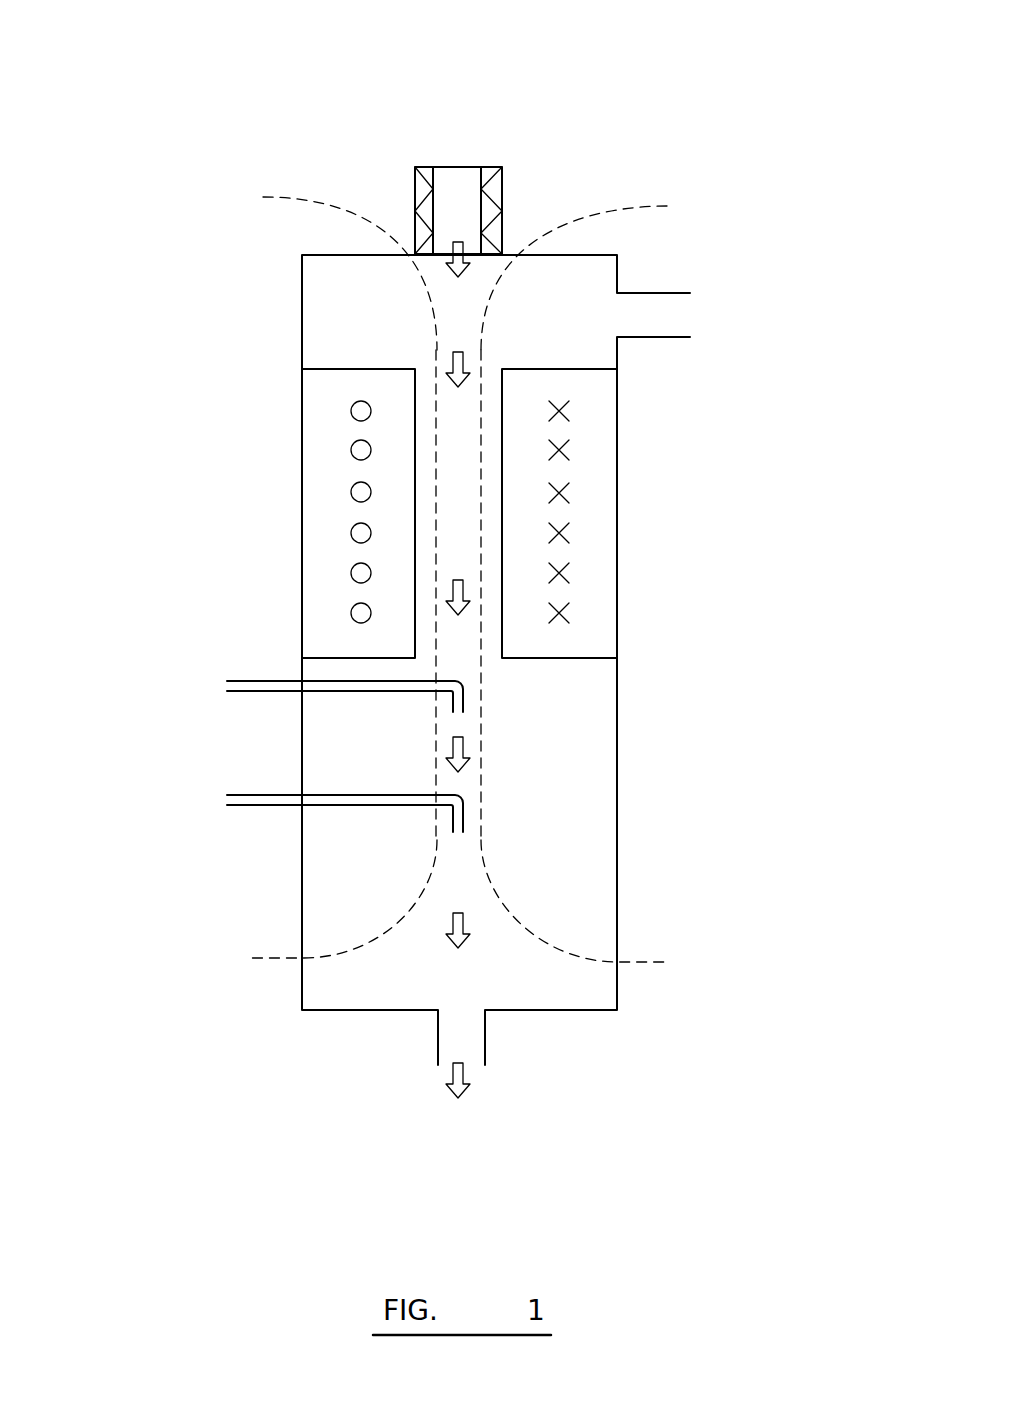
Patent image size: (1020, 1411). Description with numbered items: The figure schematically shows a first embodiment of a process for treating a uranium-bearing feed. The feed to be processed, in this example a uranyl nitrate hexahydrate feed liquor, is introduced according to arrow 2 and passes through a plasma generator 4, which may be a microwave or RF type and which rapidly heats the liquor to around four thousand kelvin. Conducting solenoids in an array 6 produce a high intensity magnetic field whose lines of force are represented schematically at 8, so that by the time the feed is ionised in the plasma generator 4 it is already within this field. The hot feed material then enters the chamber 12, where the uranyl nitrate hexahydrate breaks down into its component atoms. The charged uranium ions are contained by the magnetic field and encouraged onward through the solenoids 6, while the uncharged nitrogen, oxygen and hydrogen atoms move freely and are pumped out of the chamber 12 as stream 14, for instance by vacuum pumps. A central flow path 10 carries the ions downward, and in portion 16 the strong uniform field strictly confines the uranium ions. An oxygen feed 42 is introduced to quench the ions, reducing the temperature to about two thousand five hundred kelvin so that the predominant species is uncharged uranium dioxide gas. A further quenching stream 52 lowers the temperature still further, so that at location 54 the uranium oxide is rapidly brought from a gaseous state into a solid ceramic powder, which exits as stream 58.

The feed arrow 2 is at (458, 153).
The plasma generator 4 is at (500, 188).
The conducting solenoids array 6 is at (335, 510).
The magnetic field lines of force 8 is at (498, 280).
The central plasma stream 10 is at (483, 335).
The chamber 12 is at (340, 312).
The stream 14 is at (708, 317).
The portion 16 is at (500, 551).
The oxygen feed 42 is at (203, 686).
The further quenching stream 52 is at (203, 800).
The location 54 is at (450, 861).
The stream 58 is at (458, 1113).